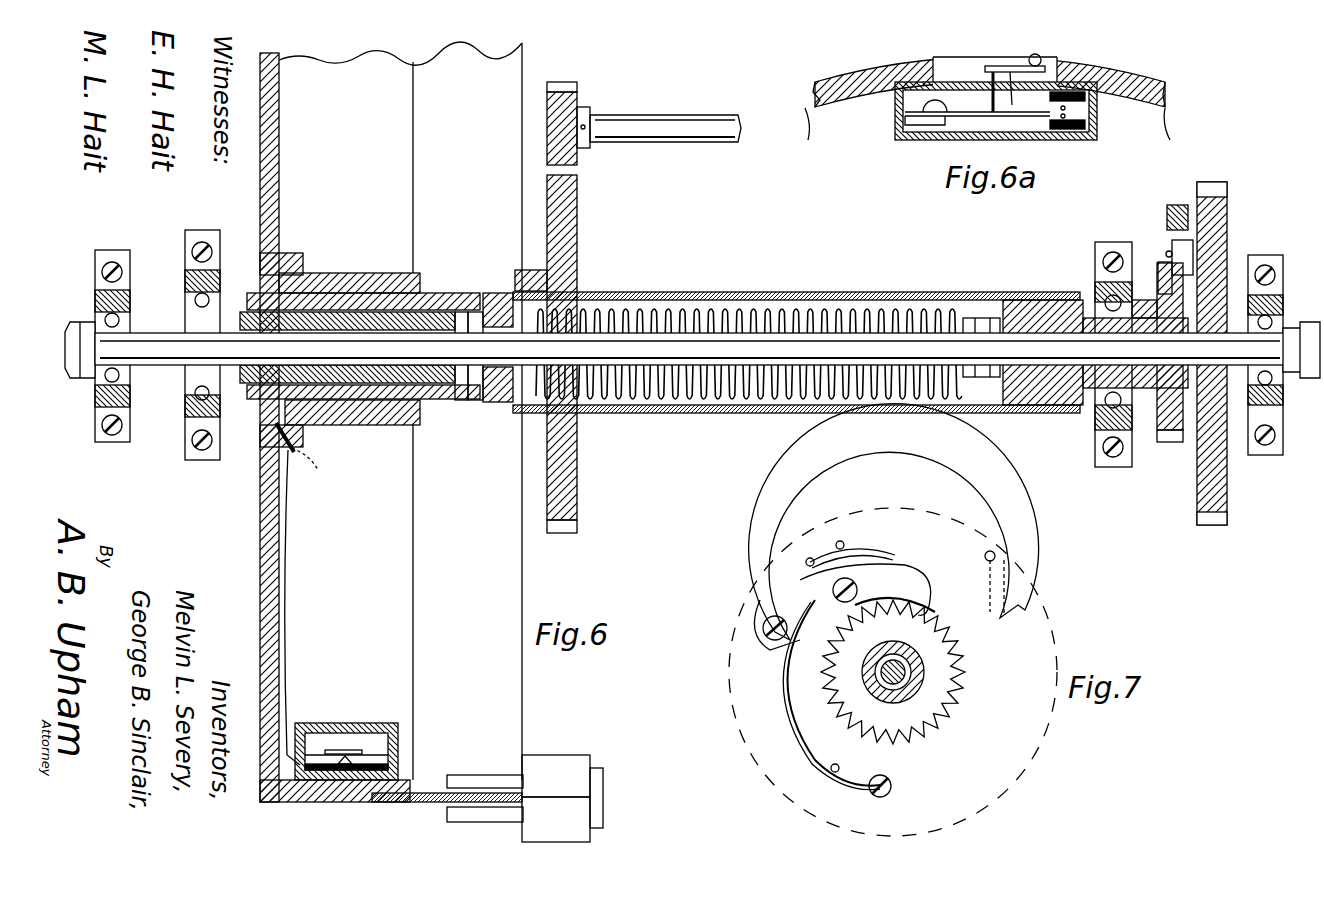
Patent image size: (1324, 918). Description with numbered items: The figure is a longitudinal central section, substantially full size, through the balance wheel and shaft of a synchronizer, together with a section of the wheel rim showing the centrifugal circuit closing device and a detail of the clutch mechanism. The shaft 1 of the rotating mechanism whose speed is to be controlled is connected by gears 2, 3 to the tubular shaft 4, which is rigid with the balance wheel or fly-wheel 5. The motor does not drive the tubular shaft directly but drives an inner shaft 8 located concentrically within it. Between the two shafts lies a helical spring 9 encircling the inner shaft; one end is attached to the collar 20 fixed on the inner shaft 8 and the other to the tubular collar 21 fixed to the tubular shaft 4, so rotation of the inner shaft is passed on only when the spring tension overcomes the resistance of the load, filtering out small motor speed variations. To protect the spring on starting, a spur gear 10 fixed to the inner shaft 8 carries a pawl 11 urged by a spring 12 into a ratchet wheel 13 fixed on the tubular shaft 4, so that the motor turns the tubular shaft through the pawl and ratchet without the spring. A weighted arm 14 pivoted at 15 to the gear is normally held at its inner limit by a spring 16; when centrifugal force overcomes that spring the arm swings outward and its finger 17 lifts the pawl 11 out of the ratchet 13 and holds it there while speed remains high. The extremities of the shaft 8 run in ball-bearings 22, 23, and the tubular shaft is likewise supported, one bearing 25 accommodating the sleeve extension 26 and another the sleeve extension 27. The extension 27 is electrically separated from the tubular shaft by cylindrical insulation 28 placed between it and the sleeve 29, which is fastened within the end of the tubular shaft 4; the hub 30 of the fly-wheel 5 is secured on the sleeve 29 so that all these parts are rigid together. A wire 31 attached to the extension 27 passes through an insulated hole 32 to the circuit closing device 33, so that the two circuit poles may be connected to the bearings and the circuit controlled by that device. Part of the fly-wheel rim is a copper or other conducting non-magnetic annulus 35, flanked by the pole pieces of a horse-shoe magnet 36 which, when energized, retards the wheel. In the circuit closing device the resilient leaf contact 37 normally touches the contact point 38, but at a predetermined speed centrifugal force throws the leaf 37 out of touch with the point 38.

In FIG. 6, the shaft 1 is at (695, 143).
In FIG. 6, the gear 2 is at (578, 85).
In FIG. 6, the gear 3 is at (578, 212).
In FIG. 6, the tubular shaft 4 is at (790, 292).
In FIG. 6a, the balance wheel 5 is at (846, 98).
In FIG. 6, the inner shaft 8 is at (1030, 335).
In FIG. 7, the inner shaft 8 is at (890, 690).
In FIG. 6, the helical spring 9 is at (718, 398).
In FIG. 6, the spur gear 10 is at (1228, 500).
In FIG. 7, the spur gear 10 is at (1018, 783).
In FIG. 6, the pawl 11 is at (1190, 258).
In FIG. 7, the pawl 11 is at (886, 590).
In FIG. 7, the spring 12 is at (878, 555).
In FIG. 6, the ratchet wheel 13 is at (1168, 443).
In FIG. 7, the ratchet wheel 13 is at (930, 722).
In FIG. 6, the pivoted arm 14 is at (1167, 212).
In FIG. 7, the pivoted arm 14 is at (968, 558).
In FIG. 7, the pivot 15 is at (768, 640).
In FIG. 7, the spring 16 is at (797, 724).
In FIG. 7, the finger 17 is at (906, 611).
In FIG. 6, the collar 20 is at (975, 378).
In FIG. 6, the tubular collar 21 is at (185, 413).
In FIG. 6, the ball-bearing 22 is at (95, 398).
In FIG. 6, the ball-bearing 23 is at (1283, 400).
In FIG. 6, the ball-bearing 25 is at (1095, 425).
In FIG. 6, the sleeve extension 26 is at (1100, 300).
In FIG. 6, the sleeve extension 27 is at (352, 385).
In FIG. 6, the cylindrical insulation 28 is at (462, 400).
In FIG. 6, the sleeve 29 is at (450, 297).
In FIG. 6, the hub 30 is at (350, 273).
In FIG. 6, the wire 31 is at (290, 575).
In FIG. 6, the insulated hole 32 is at (307, 464).
In FIG. 6, the circuit closing device 33 is at (332, 723).
In FIG. 6, the annulus 35 is at (523, 690).
In FIG. 6, the horse-shoe magnet 36 is at (570, 765).
In FIG. 6, the resilient leaf contact 37 is at (350, 750).
In FIG. 6a, the resilient leaf contact 37 is at (1010, 66).
In FIG. 6, the contact point 38 is at (355, 760).
In FIG. 6a, the contact point 38 is at (1085, 104).